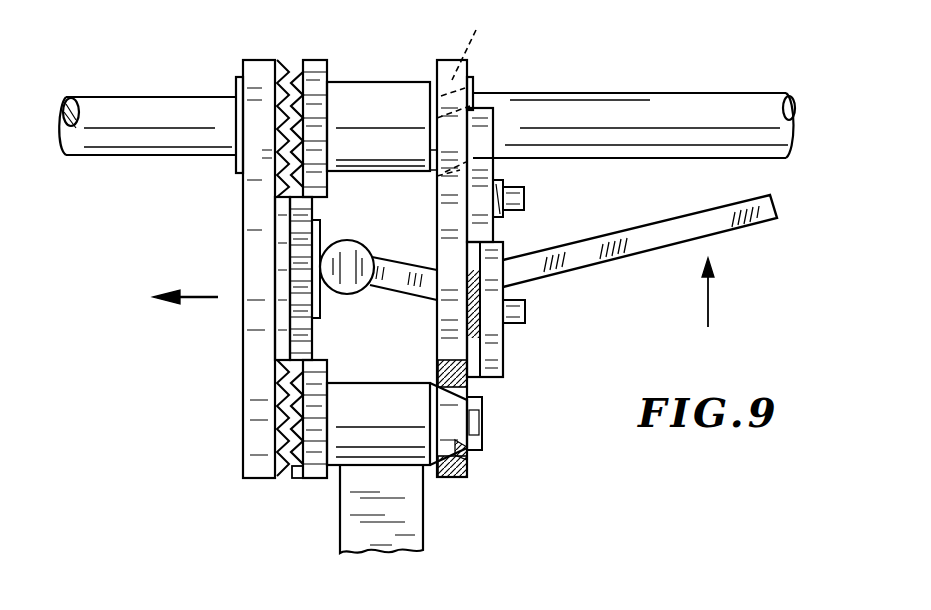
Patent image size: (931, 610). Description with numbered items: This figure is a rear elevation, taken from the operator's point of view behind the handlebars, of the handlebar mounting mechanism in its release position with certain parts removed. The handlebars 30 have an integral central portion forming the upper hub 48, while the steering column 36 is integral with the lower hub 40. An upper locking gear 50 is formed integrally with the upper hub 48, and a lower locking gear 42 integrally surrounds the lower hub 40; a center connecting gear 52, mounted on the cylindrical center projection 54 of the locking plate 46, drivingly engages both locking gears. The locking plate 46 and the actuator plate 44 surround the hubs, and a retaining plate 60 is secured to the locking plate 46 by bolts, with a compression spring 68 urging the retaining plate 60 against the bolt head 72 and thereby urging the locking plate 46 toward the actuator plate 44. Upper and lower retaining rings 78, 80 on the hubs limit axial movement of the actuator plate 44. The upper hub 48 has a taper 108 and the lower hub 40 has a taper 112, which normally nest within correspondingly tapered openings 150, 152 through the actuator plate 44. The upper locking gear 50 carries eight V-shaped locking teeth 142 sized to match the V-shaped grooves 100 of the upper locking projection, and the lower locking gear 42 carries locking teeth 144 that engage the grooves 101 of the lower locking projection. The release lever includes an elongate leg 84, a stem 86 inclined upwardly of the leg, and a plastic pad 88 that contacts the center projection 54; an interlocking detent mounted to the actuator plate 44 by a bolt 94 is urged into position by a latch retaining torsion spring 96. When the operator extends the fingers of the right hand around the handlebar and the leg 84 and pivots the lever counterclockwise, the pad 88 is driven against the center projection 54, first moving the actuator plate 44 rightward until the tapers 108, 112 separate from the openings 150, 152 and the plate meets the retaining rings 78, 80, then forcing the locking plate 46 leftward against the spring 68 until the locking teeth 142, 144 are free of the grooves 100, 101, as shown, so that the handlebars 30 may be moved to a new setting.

The handlebars 30 is at (128, 110).
The steering column 36 is at (356, 540).
The lower hub 40 is at (368, 386).
The lower locking gear 42 is at (314, 480).
The actuator plate 44 is at (452, 479).
The locking plate 46 is at (246, 222).
The upper hub 48 is at (376, 92).
The upper locking gear 50 is at (312, 62).
The center connecting gear 52 is at (290, 262).
The center projection 54 is at (318, 236).
The retaining plate 60 is at (496, 254).
The compression spring 68 is at (474, 336).
The bolt head 72 is at (526, 312).
The upper retaining ring 78 is at (475, 80).
The lower retaining ring 80 is at (478, 456).
The leg 84 is at (712, 216).
The stem 86 is at (395, 270).
The plastic pad 88 is at (349, 280).
The bolt 94 is at (526, 198).
The latch retaining torsion spring 96 is at (497, 178).
The V-shaped grooves 100 is at (282, 92).
The grooves 101 is at (280, 425).
The taper 108 is at (418, 158).
The taper 112 is at (445, 415).
The locking teeth 142 is at (414, 143).
The locking teeth 144 is at (297, 480).
The tapered opening 150 is at (469, 89).
The tapered opening 152 is at (478, 431).